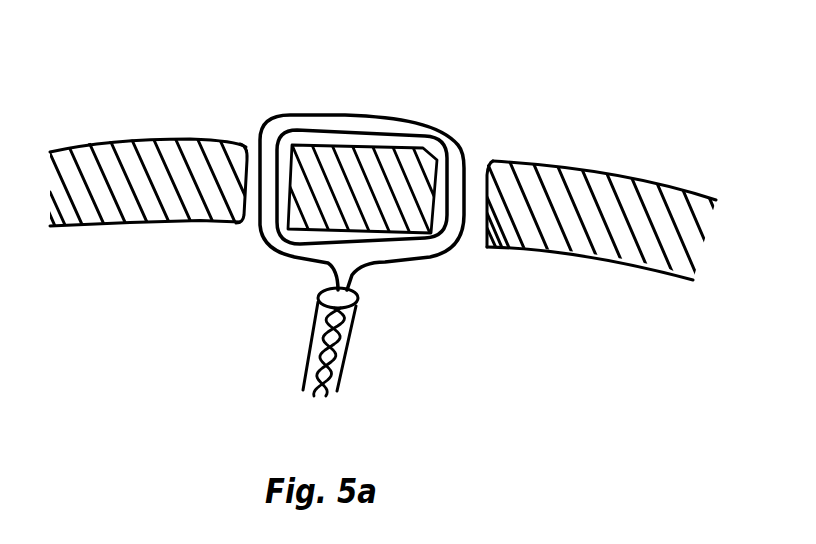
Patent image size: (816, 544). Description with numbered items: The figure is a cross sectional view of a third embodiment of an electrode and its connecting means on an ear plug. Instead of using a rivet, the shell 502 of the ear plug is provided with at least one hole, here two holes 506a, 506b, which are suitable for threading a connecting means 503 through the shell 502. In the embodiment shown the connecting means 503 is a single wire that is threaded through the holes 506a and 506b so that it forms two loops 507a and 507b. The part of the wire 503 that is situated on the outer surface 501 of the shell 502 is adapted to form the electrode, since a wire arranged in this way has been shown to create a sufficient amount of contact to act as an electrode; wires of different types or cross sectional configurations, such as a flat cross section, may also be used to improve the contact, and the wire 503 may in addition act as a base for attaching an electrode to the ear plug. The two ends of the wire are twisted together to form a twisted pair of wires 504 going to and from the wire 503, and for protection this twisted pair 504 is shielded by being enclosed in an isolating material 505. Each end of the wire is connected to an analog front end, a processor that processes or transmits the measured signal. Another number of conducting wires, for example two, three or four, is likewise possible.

The outer surface 501 is at (85, 143).
The shell 502 is at (156, 173).
The connecting means 503 is at (363, 145).
The twisted pair of wires 504 is at (321, 338).
The isolating material 505 is at (340, 369).
The hole 506a is at (256, 178).
The hole 506b is at (476, 190).
The loop 507a is at (320, 128).
The loop 507b is at (384, 93).